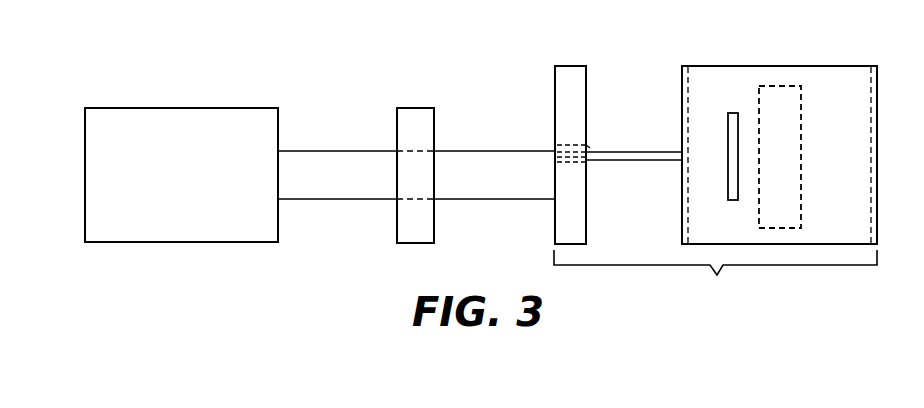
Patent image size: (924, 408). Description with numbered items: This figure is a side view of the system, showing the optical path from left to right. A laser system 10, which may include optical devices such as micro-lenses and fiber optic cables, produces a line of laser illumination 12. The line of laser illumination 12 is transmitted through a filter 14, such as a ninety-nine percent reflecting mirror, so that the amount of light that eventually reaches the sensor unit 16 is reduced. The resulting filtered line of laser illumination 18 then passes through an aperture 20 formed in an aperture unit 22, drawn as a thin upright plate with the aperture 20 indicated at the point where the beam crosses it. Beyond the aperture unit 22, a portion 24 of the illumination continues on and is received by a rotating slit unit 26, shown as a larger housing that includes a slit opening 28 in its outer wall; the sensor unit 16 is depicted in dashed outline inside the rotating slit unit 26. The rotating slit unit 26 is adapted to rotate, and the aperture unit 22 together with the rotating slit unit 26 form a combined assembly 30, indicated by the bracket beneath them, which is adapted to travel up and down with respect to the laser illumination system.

The laser system 10 is at (242, 113).
The line of laser illumination 12 is at (333, 158).
The filter 14 is at (419, 113).
The sensor unit 16 is at (782, 88).
The filtered line of laser illumination 18 is at (495, 158).
The aperture 20 is at (589, 146).
The aperture unit 22 is at (570, 72).
The portion of the illumination 24 is at (652, 152).
The rotating slit unit 26 is at (843, 73).
The slit opening 28 is at (730, 113).
The combined assembly 30 is at (715, 277).